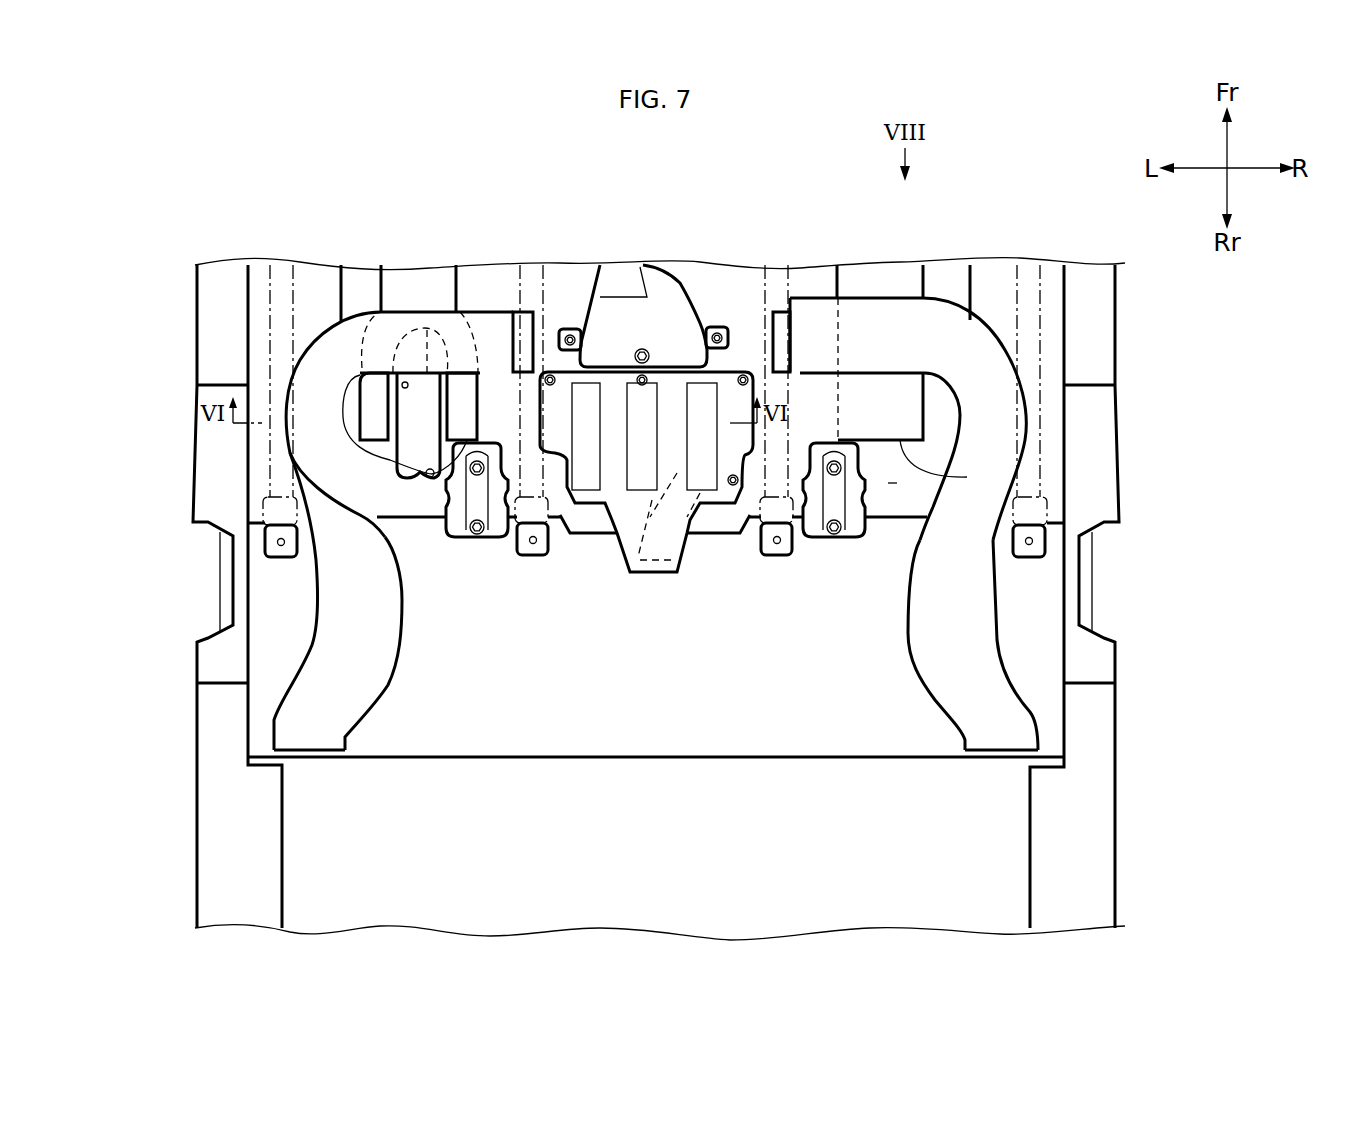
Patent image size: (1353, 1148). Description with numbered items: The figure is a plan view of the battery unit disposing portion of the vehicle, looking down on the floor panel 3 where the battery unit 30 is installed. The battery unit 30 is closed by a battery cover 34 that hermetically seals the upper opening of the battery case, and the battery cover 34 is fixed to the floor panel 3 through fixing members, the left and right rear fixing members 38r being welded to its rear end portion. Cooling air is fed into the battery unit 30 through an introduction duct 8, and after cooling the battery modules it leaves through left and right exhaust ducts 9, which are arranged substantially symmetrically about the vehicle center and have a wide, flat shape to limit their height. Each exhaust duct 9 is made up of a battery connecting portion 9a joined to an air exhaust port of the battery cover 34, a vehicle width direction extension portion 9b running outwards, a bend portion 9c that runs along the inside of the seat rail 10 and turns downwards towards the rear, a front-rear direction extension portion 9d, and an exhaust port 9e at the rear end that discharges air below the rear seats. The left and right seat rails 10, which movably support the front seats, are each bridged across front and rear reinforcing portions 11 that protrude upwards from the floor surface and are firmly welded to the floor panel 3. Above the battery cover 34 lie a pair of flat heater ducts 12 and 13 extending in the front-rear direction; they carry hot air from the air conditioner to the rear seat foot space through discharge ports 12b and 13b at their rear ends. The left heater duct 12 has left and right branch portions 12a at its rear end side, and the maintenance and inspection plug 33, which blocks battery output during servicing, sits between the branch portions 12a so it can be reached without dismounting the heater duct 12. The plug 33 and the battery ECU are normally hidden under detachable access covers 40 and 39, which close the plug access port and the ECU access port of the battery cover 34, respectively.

The floor panel 3 is at (598, 695).
The introduction duct 8 is at (663, 317).
The exhaust duct 9 is at (328, 337).
The battery connecting portion 9a is at (550, 320).
The vehicle width direction extension portion 9b is at (485, 322).
The bend portion 9c is at (330, 360).
The front-rear direction extension portion 9d is at (350, 607).
The exhaust port 9e is at (310, 751).
The seat rail 10 is at (547, 310).
The reinforcing portion 11 is at (265, 537).
The heater duct 12 is at (437, 287).
The branch portion 12a is at (483, 400).
The discharge port 12b is at (426, 475).
The heater duct 13 is at (945, 268).
The discharge port 13b is at (905, 478).
The battery unit 30 is at (720, 537).
The maintenance and inspection plug 33 is at (405, 302).
The battery cover 34 is at (897, 483).
The rear fixing member 38r is at (478, 500).
The access cover 39 is at (662, 540).
The access cover 40 is at (422, 410).